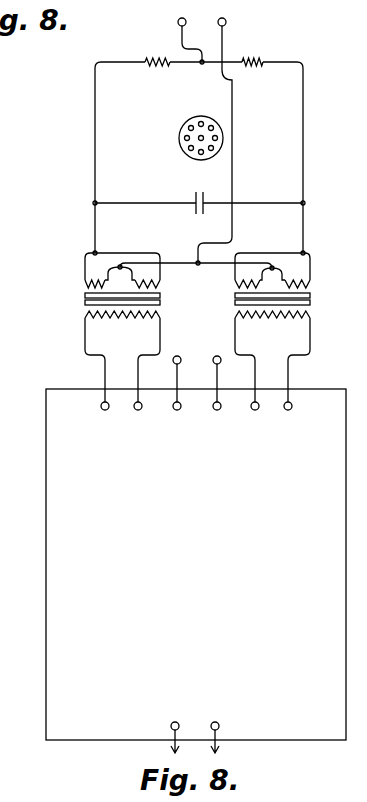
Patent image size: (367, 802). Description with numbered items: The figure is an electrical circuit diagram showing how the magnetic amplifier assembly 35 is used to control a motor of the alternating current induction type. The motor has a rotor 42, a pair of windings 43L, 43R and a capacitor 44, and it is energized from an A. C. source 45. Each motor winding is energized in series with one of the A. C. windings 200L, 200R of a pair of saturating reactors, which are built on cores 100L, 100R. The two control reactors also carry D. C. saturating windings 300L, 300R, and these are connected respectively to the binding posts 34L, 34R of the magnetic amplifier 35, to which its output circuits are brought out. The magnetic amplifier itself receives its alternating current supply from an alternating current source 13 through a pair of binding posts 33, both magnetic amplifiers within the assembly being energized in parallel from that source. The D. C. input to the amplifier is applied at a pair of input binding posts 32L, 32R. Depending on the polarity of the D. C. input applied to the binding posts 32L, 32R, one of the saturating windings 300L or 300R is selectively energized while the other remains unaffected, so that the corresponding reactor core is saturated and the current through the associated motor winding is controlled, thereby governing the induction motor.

The A. C. source 45 is at (209, 23).
The motor winding 43L is at (154, 78).
The motor winding 43R is at (261, 78).
The rotor 42 is at (185, 138).
The capacitor 44 is at (199, 210).
The A. C. winding 200L is at (178, 260).
The A. C. winding 200R is at (272, 260).
The core 100L is at (91, 299).
The core 100R is at (301, 303).
The D. C. saturating winding 300L is at (122, 356).
The D. C. saturating winding 300R is at (272, 356).
The alternating current source 13 is at (206, 363).
The magnetic amplifier assembly 35 is at (40, 437).
The binding posts 34L is at (120, 419).
The binding posts 33 is at (197, 419).
The binding posts 34R is at (271, 419).
The input binding post 32L is at (152, 728).
The input binding post 32R is at (238, 728).